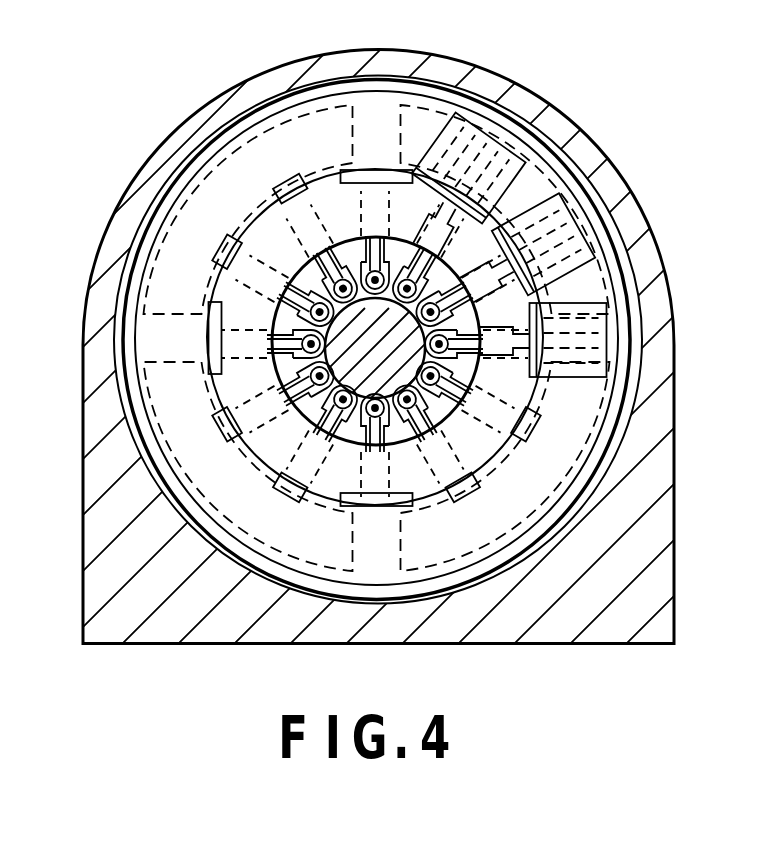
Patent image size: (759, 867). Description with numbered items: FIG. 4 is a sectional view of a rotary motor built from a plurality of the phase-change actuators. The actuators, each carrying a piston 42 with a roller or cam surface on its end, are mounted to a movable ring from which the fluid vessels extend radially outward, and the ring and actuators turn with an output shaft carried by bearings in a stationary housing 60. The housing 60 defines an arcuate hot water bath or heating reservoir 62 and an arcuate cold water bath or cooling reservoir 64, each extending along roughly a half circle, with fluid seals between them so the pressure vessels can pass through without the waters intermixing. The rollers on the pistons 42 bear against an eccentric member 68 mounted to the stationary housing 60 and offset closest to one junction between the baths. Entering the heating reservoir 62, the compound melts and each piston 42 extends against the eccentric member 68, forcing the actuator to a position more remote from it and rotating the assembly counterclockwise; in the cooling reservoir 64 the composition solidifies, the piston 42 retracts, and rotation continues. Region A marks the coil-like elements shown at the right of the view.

The stationary housing 60 is at (643, 542).
The heating reservoir 62 is at (477, 108).
The cooling reservoir 64 is at (258, 137).
The piston 42 is at (357, 167).
The eccentric member 68 is at (285, 418).
The coil A is at (583, 253).